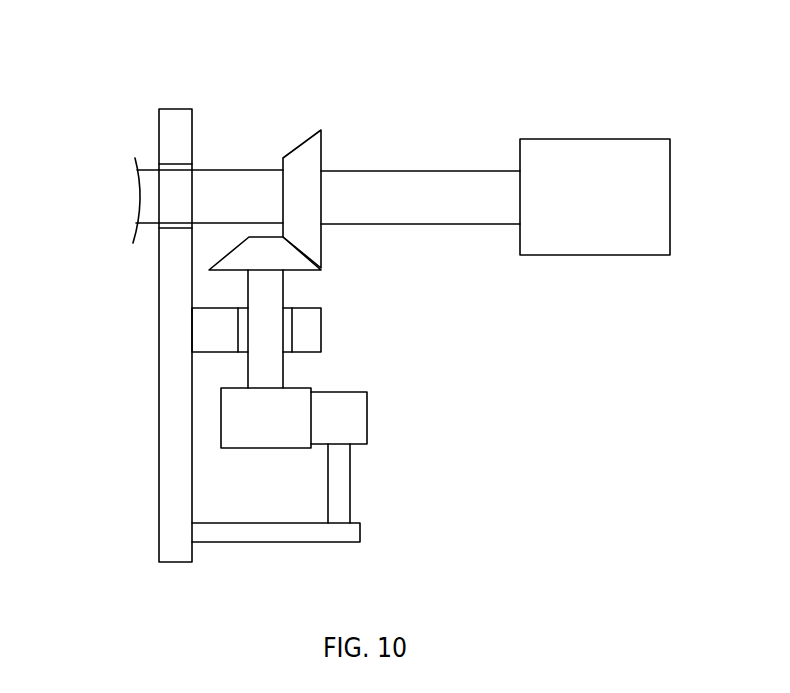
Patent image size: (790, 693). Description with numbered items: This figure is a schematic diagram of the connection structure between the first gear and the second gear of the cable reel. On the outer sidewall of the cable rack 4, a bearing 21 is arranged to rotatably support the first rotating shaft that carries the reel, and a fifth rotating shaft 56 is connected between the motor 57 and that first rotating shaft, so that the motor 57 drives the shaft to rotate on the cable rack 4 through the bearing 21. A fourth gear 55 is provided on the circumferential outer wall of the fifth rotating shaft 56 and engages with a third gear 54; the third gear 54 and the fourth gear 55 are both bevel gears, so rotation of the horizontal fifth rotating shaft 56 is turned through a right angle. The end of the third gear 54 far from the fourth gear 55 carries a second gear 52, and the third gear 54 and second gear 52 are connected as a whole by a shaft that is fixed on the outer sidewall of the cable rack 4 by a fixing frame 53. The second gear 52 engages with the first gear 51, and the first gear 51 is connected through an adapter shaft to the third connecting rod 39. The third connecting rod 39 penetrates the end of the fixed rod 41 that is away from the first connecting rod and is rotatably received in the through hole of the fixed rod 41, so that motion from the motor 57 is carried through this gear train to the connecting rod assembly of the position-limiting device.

The cable rack 4 is at (178, 137).
The bearing 21 is at (177, 227).
The third connecting rod 39 is at (336, 481).
The fixed rod 41 is at (273, 532).
The first gear 51 is at (337, 412).
The second gear 52 is at (255, 423).
The fixing frame 53 is at (217, 328).
The third gear 54 is at (248, 260).
The fourth gear 55 is at (302, 162).
The fifth rotating shaft 56 is at (398, 186).
The motor 57 is at (565, 228).